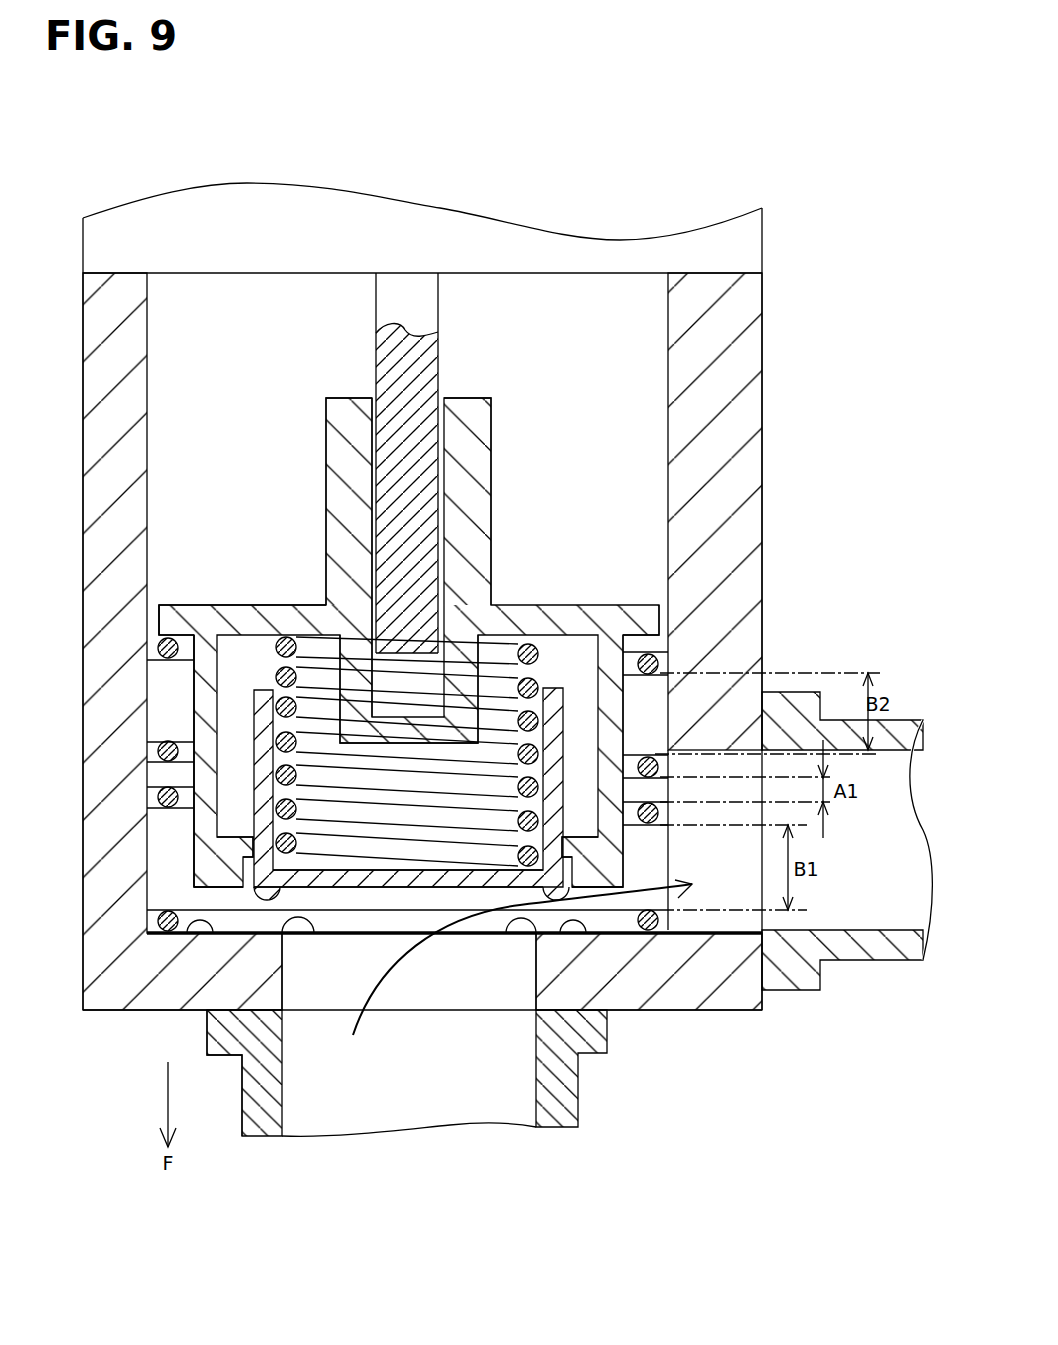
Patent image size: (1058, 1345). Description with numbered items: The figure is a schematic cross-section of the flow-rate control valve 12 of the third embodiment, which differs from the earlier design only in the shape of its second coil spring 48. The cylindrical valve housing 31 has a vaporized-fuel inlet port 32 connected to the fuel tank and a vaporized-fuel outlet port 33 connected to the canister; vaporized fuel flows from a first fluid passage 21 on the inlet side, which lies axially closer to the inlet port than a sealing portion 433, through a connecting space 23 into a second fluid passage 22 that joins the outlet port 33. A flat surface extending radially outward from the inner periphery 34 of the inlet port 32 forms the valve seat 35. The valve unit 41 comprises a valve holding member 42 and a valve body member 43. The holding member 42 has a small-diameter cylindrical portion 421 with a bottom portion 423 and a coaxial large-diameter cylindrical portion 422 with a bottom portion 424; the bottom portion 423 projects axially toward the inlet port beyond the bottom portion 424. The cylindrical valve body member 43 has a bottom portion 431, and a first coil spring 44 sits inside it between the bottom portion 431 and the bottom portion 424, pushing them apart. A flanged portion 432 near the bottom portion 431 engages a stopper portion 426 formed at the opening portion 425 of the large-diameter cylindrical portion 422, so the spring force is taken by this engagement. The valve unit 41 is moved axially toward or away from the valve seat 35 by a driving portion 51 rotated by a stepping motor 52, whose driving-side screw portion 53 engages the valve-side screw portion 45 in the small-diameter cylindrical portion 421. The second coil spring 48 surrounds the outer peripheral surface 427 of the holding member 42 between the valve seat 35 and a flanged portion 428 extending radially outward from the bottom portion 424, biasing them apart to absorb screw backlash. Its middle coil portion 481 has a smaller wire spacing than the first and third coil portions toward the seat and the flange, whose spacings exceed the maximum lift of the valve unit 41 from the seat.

The flow-rate control valve 12 is at (690, 216).
The stepping motor 52 is at (120, 243).
The valve housing 31 is at (107, 305).
The driving portion 51 is at (397, 362).
The driving-side screw portion 53 is at (377, 428).
The valve-side screw portion 45 is at (377, 453).
The valve unit 41 is at (235, 606).
The small-diameter cylindrical portion 421 is at (337, 409).
The large-diameter cylindrical portion 422 is at (222, 604).
The bottom portion 424 is at (273, 612).
The flanged portion 428 is at (168, 627).
The valve holding member 42 is at (193, 667).
The outer peripheral surface 427 is at (195, 693).
The flanged portion 432 is at (222, 843).
The stopper portion 426 is at (230, 872).
The valve body member 43 is at (255, 713).
The opening portion 425 is at (253, 893).
The bottom portion 431 is at (338, 878).
The bottom portion 423 is at (385, 878).
The first coil spring 44 is at (275, 785).
The second coil spring 48 is at (158, 751).
The middle coil portion 481 is at (651, 753).
The vaporized-fuel outlet port 33 is at (877, 893).
The second fluid passage 22 is at (693, 920).
The connecting space 23 is at (617, 935).
The inner periphery 34 is at (316, 937).
The valve seat 35 is at (187, 938).
The first fluid passage 21 is at (403, 733).
The vaporized-fuel inlet port 32 is at (295, 1113).
The sealing portion 433 is at (238, 938).